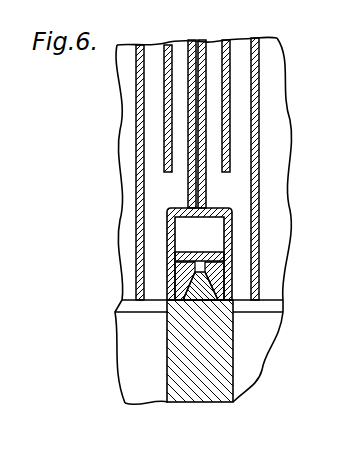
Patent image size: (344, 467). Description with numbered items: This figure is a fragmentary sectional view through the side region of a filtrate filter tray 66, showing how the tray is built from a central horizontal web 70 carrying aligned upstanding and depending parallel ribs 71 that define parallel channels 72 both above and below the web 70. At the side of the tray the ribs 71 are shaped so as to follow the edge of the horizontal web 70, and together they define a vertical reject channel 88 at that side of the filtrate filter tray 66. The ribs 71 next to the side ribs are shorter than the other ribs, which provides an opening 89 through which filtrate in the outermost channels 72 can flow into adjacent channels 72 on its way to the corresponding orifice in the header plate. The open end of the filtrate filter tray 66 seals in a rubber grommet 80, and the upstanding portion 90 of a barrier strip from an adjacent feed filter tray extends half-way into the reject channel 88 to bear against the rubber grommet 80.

The filtrate filter tray 66 is at (132, 74).
The horizontal web 70 is at (153, 242).
The rib 71 is at (199, 40).
The channel 72 is at (178, 108).
The rubber grommet 80 is at (172, 324).
The reject channel 88 is at (212, 220).
The opening 89 is at (170, 187).
The upstanding portion 90 is at (175, 257).